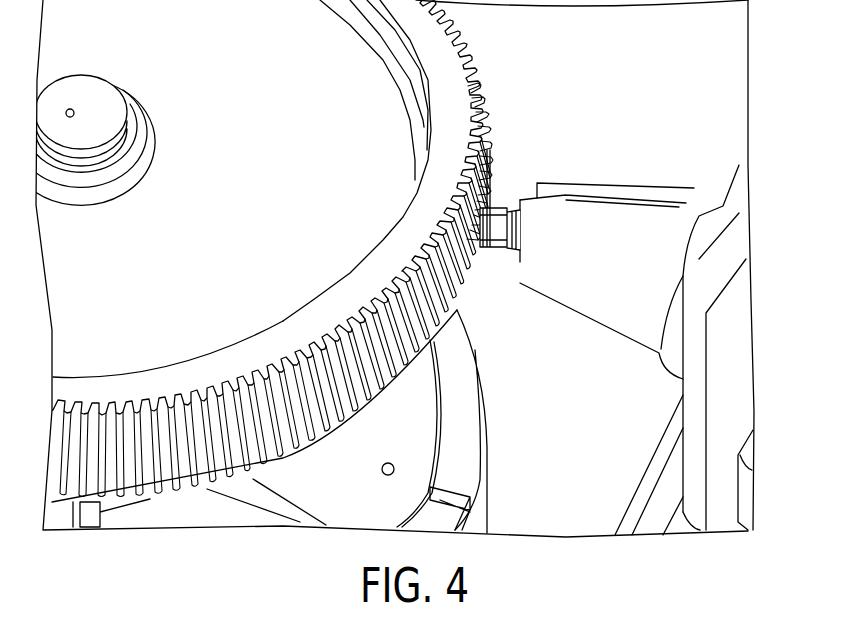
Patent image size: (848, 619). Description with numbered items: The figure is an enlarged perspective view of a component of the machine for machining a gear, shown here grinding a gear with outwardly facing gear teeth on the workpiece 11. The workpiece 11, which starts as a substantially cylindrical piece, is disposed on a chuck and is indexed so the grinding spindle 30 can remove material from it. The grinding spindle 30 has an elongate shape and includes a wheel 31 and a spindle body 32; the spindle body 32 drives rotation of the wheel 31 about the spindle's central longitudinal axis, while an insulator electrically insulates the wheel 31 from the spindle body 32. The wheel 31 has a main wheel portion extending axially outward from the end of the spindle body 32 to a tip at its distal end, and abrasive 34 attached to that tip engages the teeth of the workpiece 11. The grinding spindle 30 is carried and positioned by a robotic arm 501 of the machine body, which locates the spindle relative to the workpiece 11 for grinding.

The workpiece 11 is at (77, 323).
The grinding spindle 30 is at (633, 329).
The wheel 31 is at (485, 242).
The spindle body 32 is at (638, 193).
The abrasive 34 is at (488, 202).
The robotic arm 501 is at (739, 194).